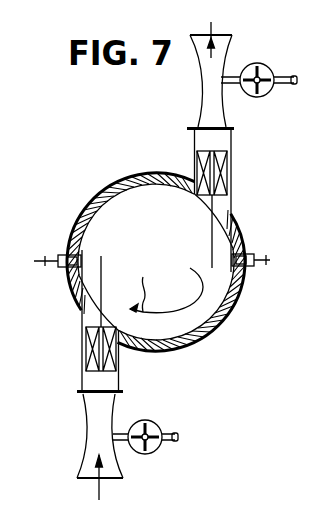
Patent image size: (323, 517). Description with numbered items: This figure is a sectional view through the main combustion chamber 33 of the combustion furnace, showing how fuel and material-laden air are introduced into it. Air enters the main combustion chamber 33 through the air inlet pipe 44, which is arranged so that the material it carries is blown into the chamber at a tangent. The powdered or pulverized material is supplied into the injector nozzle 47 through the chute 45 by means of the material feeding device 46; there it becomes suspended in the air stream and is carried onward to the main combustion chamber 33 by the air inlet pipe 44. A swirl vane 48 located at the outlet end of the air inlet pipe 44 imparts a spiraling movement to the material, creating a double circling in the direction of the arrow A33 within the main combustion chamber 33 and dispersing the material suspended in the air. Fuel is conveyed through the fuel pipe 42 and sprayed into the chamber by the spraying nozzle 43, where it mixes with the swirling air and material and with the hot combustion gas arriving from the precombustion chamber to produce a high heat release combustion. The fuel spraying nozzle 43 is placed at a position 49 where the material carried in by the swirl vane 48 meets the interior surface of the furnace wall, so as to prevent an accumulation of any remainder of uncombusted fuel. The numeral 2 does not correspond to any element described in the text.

The annular vortex chamber housing 2 is at (80, 217).
The main combustion chamber 33 is at (230, 307).
The arrow A33 is at (162, 283).
The fuel pipe 42 is at (275, 271).
The spraying nozzle 43 is at (67, 267).
The air inlet pipe 44 is at (232, 145).
The chute 45 is at (283, 73).
The material feeding device 46 is at (267, 98).
The injector nozzle 47 is at (203, 88).
The swirl vane 48 is at (228, 180).
The position 49 is at (230, 242).